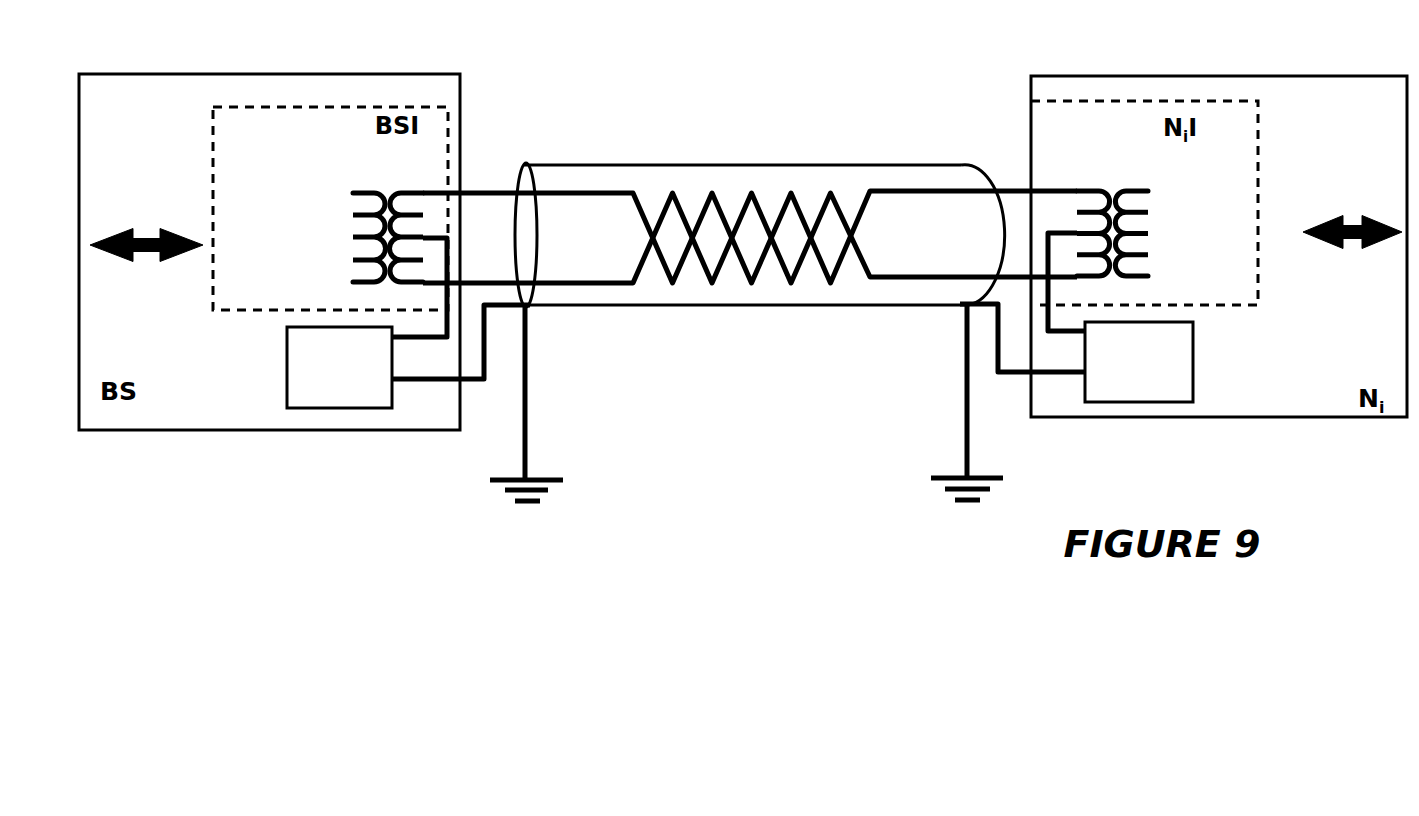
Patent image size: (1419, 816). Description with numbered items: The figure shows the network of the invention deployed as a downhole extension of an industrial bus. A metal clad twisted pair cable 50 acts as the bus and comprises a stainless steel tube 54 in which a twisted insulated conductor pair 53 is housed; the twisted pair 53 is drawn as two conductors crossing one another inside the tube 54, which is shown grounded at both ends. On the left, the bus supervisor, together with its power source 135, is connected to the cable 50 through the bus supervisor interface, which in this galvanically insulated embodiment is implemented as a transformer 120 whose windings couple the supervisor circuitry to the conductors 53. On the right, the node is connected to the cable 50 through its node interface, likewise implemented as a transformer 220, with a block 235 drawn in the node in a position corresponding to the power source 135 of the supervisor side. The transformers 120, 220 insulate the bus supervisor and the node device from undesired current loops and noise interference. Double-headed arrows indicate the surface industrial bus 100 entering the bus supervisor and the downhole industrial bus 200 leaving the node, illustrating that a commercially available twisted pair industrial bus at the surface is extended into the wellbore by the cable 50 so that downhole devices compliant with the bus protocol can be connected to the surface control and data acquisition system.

The metal clad twisted pair cable 50 is at (750, 174).
The twisted insulated conductor pair 53 is at (903, 195).
The stainless steel tube 54 is at (902, 172).
The surface industrial bus 100 is at (146, 230).
The transformer 120 is at (385, 220).
The power source 135 is at (339, 367).
The downhole industrial bus 200 is at (1352, 219).
The transformer 220 is at (1112, 220).
The node interface circuit 235 is at (1139, 362).